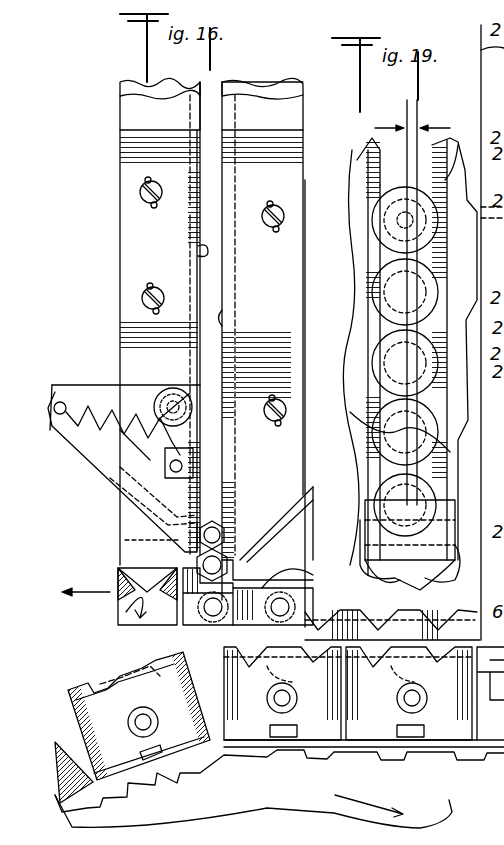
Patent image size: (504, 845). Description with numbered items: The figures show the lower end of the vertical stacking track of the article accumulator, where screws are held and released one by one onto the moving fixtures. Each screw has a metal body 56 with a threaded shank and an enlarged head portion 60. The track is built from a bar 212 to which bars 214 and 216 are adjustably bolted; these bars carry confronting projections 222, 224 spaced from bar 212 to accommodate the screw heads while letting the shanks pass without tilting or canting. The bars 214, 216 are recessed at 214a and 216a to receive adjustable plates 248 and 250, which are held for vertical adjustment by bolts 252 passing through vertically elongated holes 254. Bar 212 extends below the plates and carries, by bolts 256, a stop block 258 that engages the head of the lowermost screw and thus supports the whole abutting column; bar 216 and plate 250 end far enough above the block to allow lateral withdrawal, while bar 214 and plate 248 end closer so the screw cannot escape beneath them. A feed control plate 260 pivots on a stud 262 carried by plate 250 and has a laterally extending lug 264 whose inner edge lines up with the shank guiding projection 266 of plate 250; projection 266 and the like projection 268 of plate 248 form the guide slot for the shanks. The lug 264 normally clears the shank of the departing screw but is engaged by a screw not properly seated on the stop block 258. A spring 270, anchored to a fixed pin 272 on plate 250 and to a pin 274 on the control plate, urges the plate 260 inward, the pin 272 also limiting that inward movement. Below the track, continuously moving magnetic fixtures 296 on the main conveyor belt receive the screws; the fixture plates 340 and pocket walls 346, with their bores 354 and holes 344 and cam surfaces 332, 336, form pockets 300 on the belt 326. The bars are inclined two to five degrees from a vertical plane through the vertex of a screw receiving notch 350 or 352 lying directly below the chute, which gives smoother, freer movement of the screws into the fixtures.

In FIG. 16, the metal body 56 is at (226, 539).
In FIG. 19, the metal body 56 is at (400, 224).
In FIG. 16, the head portion 60 is at (222, 532).
In FIG. 19, the head portion 60 is at (382, 190).
In FIG. 16, the bar 212 is at (282, 86).
In FIG. 19, the bar 212 is at (481, 86).
In FIG. 16, the bar 214 is at (303, 118).
In FIG. 19, the bar 214 is at (305, 124).
In FIG. 16, the recess 214a is at (262, 104).
In FIG. 16, the bar 216 is at (120, 107).
In FIG. 19, the bar 216 is at (462, 292).
In FIG. 16, the recess 216a is at (160, 104).
In FIG. 16, the confronting projection 222 is at (227, 98).
In FIG. 16, the confronting projection 224 is at (198, 98).
In FIG. 16, the adjustable plate 248 is at (318, 507).
In FIG. 19, the adjustable plate 248 is at (357, 152).
In FIG. 16, the adjustable plate 250 is at (96, 506).
In FIG. 19, the adjustable plate 250 is at (450, 152).
In FIG. 16, the bolt 252 is at (140, 190).
In FIG. 16, the vertically elongated hole 254 is at (146, 208).
In FIG. 16, the bolt 256 is at (206, 618).
In FIG. 19, the bolt 256 is at (305, 610).
In FIG. 16, the stop block 258 is at (265, 585).
In FIG. 16, the feed control plate 260 is at (94, 384).
In FIG. 16, the stud 262 is at (175, 388).
In FIG. 16, the laterally extending lug 264 is at (180, 548).
In FIG. 19, the laterally extending lug 264 is at (352, 416).
In FIG. 16, the shank guiding projection 266 is at (196, 254).
In FIG. 16, the projection 268 is at (235, 314).
In FIG. 16, the spring 270 is at (84, 458).
In FIG. 16, the fixed pin 272 is at (182, 466).
In FIG. 16, the pin 274 is at (62, 400).
In FIG. 16, the magnetic fixture 296 is at (158, 612).
In FIG. 16, the pocket 300 is at (460, 757).
In FIG. 16, the conveyor belt 326 is at (266, 800).
In FIG. 16, the cam surface 332 is at (290, 674).
In FIG. 19, the cam surface 332 is at (385, 580).
In FIG. 16, the notch 336 is at (262, 668).
In FIG. 19, the notch 336 is at (366, 550).
In FIG. 16, the pocket plate 340 is at (325, 737).
In FIG. 19, the pocket plate 340 is at (448, 582).
In FIG. 16, the hole 344 is at (446, 744).
In FIG. 16, the pocket wall 346 is at (170, 742).
In FIG. 16, the screw receiving notch 350 is at (120, 670).
In FIG. 16, the screw receiving notch 352 is at (70, 694).
In FIG. 19, the screw receiving notch 352 is at (366, 524).
In FIG. 16, the bore 354 is at (397, 702).